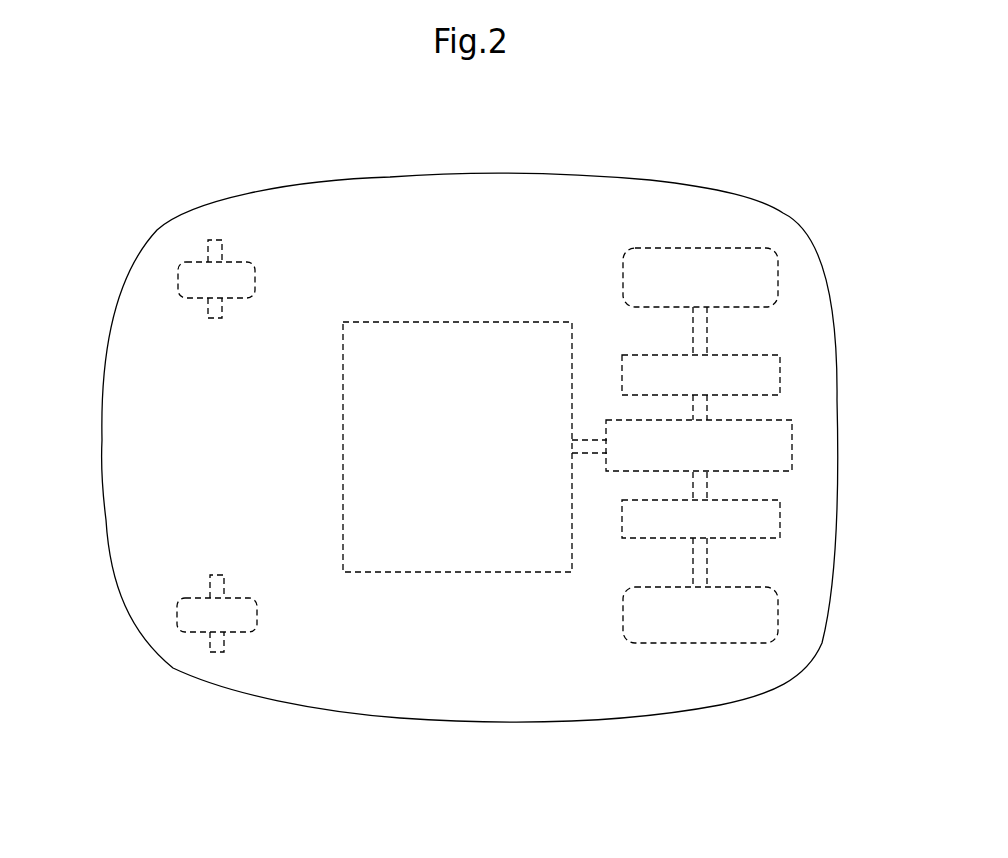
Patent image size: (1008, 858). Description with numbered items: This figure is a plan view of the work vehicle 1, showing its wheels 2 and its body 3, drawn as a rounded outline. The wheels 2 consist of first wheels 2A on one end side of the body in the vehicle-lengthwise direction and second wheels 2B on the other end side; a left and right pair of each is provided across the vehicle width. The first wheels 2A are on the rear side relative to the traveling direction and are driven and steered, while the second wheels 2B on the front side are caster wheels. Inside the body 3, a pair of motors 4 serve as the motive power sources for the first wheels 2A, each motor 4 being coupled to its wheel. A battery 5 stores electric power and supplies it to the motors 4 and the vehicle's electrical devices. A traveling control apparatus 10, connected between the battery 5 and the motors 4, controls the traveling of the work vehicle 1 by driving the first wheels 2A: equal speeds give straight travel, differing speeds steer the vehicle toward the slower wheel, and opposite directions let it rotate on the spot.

The work vehicle 1 is at (193, 187).
The wheels 2 is at (404, 451).
The first wheels 2A is at (698, 253).
The second wheels 2B is at (177, 276).
The body 3 is at (482, 182).
The motors 4 is at (779, 371).
The battery 5 is at (445, 325).
The traveling control apparatus 10 is at (792, 448).